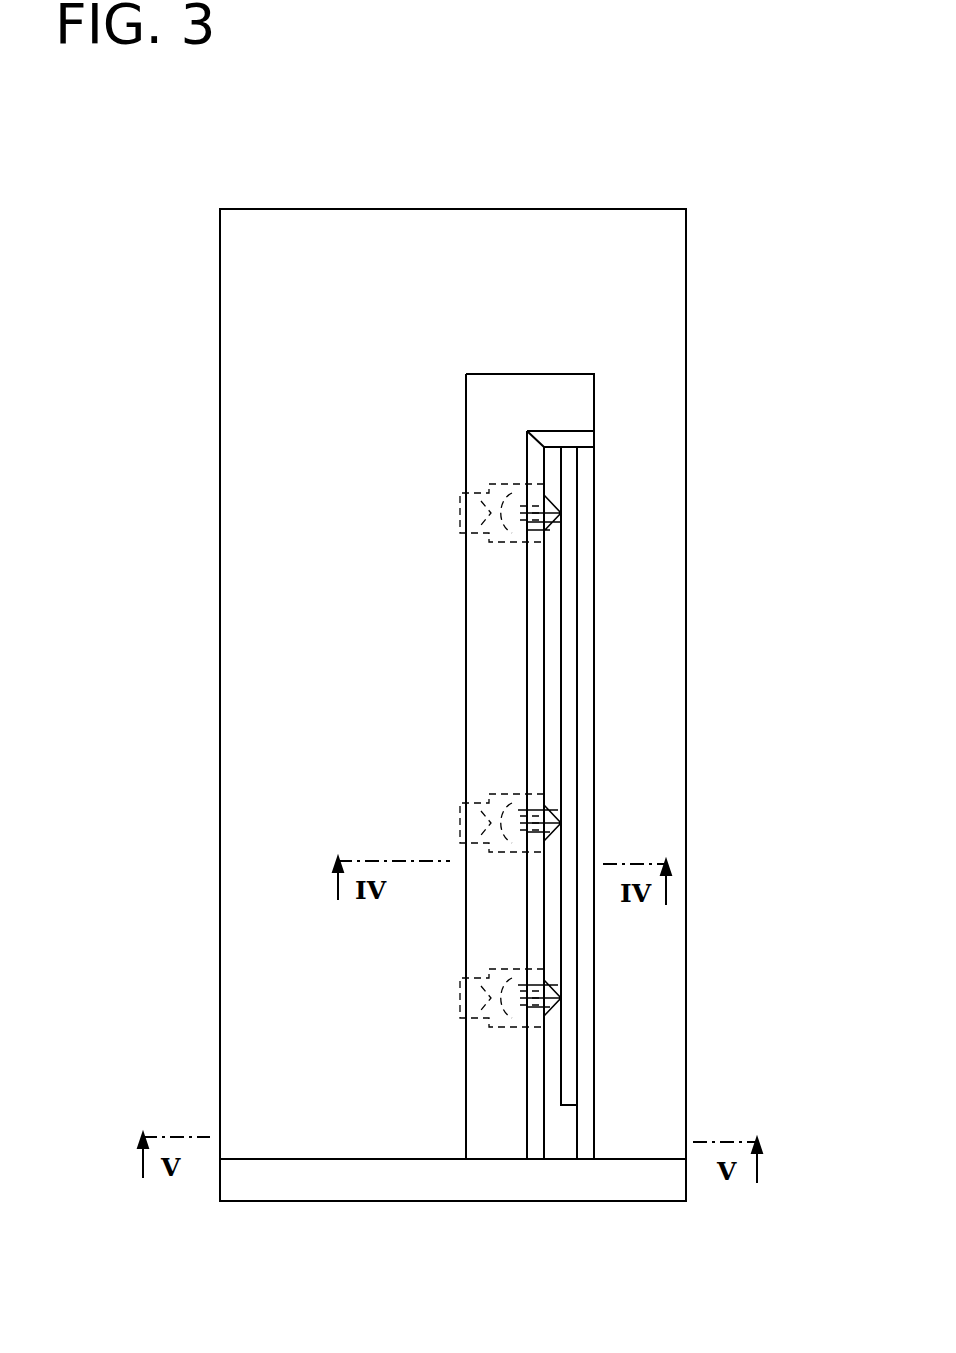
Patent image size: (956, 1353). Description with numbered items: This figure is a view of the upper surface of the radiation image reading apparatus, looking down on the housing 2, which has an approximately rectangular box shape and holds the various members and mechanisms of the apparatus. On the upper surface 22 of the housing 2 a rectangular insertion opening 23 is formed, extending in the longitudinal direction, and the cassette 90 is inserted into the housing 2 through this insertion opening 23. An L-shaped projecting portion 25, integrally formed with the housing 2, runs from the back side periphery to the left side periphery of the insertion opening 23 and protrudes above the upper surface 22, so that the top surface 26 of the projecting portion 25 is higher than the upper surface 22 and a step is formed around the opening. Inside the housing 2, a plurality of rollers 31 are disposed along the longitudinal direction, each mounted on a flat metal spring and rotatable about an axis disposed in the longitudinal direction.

The housing 2 is at (686, 348).
The upper surface 22 is at (641, 443).
The insertion opening 23 is at (559, 1148).
The projecting portion 25 is at (466, 663).
The top surface 26 is at (509, 392).
The rollers 31 is at (561, 522).
The cassette 90 is at (568, 665).